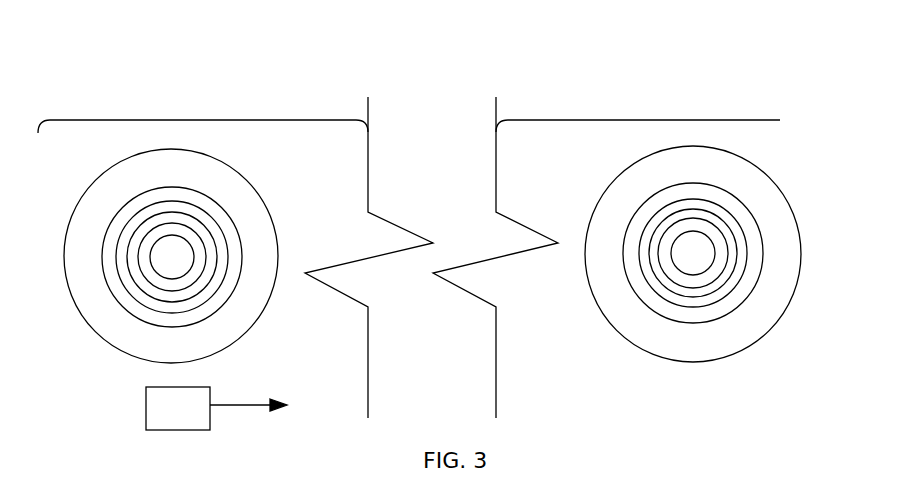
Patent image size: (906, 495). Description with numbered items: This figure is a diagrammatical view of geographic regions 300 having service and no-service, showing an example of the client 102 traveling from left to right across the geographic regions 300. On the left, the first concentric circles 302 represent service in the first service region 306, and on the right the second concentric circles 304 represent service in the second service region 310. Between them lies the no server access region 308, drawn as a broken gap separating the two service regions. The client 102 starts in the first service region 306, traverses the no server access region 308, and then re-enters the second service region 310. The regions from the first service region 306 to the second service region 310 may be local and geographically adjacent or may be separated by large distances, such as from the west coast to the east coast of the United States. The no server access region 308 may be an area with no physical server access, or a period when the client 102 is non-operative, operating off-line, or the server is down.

The geographic regions 300 is at (168, 55).
The first concentric circles 302 is at (160, 362).
The second concentric circles 304 is at (690, 361).
The first service region 306 is at (207, 120).
The no server access region 308 is at (449, 170).
The second service region 310 is at (658, 120).
The client 102 is at (196, 418).